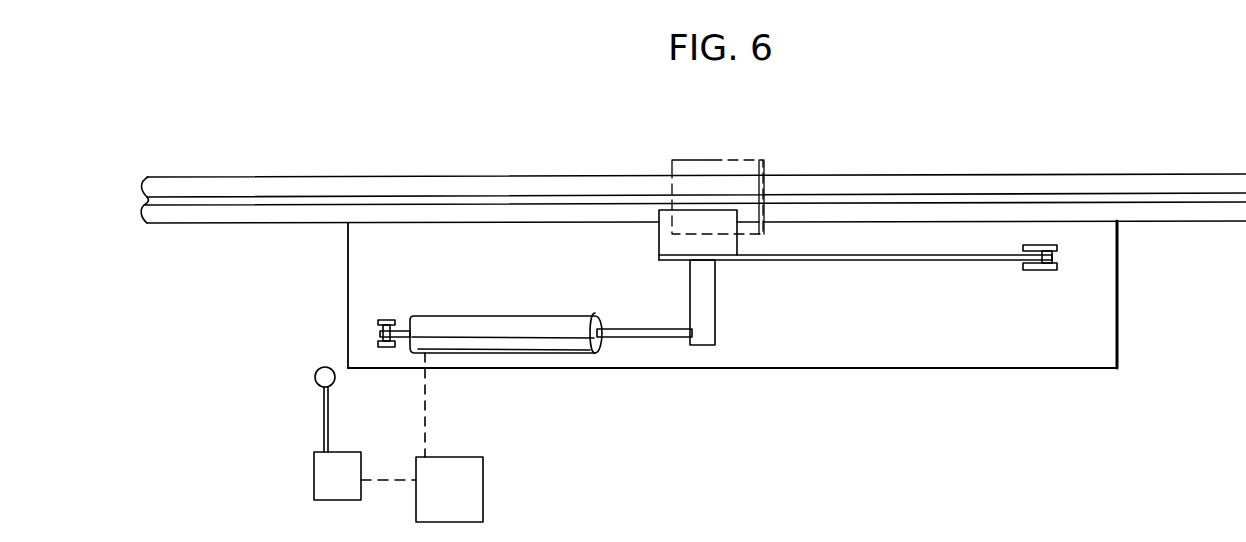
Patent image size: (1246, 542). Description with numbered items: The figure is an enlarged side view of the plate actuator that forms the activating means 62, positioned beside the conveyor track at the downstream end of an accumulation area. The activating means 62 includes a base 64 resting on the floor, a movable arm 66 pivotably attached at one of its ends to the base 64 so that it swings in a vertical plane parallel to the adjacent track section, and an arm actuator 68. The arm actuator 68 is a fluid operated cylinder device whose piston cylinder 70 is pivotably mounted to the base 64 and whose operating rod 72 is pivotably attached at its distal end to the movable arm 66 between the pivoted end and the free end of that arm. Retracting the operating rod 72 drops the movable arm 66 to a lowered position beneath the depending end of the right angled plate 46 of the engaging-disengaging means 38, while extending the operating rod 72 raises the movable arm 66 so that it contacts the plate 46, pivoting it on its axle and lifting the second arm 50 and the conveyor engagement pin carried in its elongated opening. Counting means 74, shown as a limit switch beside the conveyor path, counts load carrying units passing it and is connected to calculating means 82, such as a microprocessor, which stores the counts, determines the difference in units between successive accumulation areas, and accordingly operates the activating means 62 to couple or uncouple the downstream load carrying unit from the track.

The engaging-disengaging means 38 is at (766, 144).
The right angled plate 46 is at (658, 170).
The second arm 50 is at (697, 172).
The activating means 62 is at (892, 280).
The base 64 is at (973, 350).
The movable arm 66 is at (955, 260).
The arm actuator 68 is at (587, 372).
The piston cylinder 70 is at (513, 338).
The operating rod 72 is at (642, 338).
The counting means 74 is at (287, 481).
The calculating means 82 is at (473, 493).